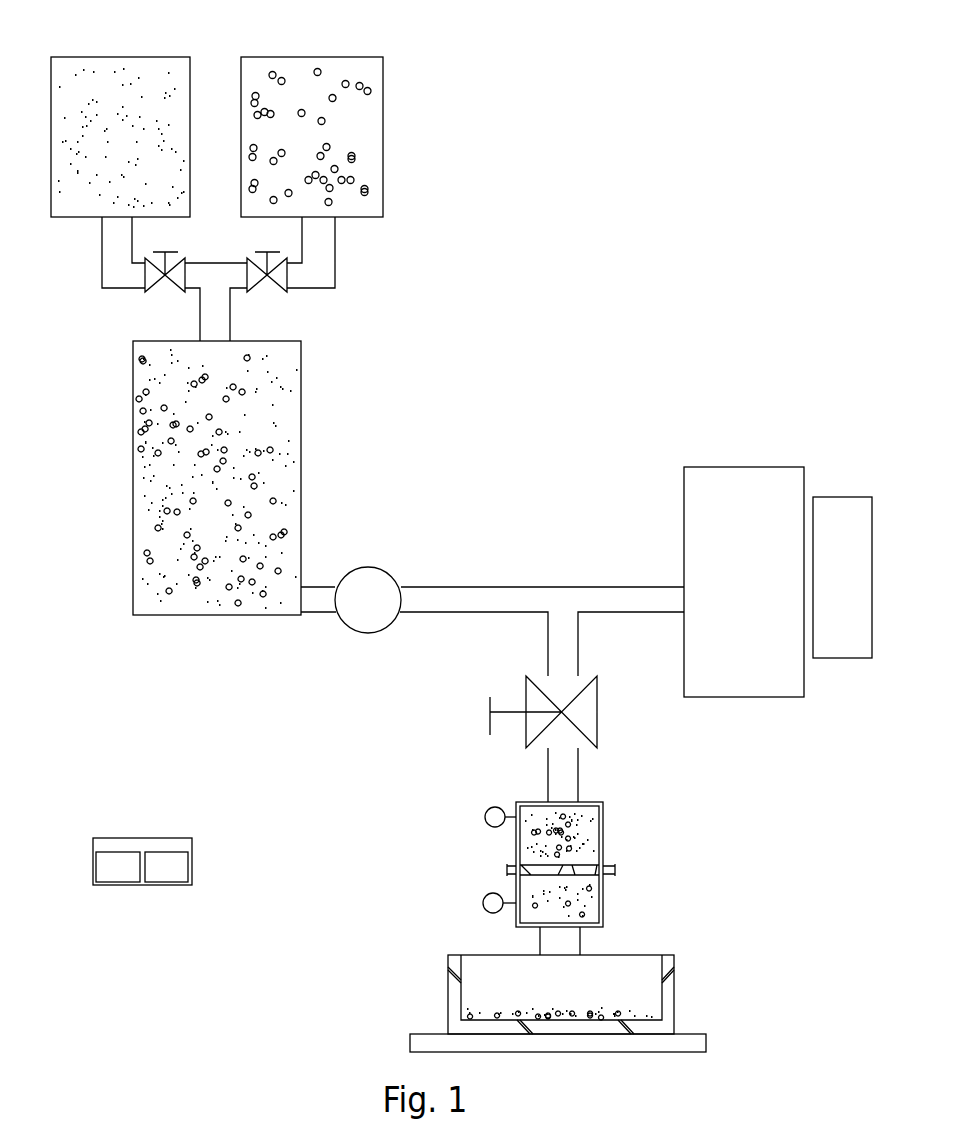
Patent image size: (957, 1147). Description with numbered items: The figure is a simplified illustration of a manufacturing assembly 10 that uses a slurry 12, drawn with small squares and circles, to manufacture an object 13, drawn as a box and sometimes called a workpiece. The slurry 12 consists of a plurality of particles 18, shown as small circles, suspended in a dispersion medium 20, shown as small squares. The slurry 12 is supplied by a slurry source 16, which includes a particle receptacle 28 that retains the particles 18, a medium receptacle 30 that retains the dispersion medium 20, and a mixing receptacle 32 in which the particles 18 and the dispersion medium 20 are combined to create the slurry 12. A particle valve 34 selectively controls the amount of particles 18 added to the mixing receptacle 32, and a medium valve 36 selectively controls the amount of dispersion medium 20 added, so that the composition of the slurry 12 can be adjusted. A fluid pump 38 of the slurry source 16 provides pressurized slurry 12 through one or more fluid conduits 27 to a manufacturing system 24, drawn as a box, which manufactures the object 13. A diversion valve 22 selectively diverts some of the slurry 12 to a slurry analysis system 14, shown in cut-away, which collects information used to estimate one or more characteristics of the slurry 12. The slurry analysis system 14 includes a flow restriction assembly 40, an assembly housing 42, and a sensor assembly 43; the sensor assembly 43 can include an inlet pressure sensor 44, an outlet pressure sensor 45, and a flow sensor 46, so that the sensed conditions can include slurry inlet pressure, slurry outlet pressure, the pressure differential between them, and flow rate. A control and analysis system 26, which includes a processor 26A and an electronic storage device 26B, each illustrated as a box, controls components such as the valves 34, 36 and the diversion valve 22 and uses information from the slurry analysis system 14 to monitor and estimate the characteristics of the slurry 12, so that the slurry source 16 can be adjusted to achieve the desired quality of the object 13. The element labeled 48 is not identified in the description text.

The manufacturing assembly 10 is at (588, 84).
The slurry 12 is at (216, 461).
The object 13 is at (828, 579).
The slurry analysis system 14 is at (505, 832).
The slurry source 16 is at (313, 422).
The particles 18 is at (312, 111).
The dispersion medium 20 is at (120, 111).
The diversion valve 22 is at (581, 703).
The manufacturing system 24 is at (730, 579).
The control and analysis system 26 is at (173, 861).
The processor 26A is at (99, 878).
The electronic storage device 26B is at (147, 878).
The fluid conduit 27 is at (478, 586).
The particle receptacle 28 is at (338, 57).
The medium receptacle 30 is at (148, 56).
The mixing receptacle 32 is at (133, 410).
The particle valve 34 is at (282, 289).
The medium valve 36 is at (148, 288).
The fluid pump 38 is at (355, 612).
The flow restriction assembly 40 is at (517, 863).
The assembly housing 42 is at (517, 887).
The sensor assembly 43 is at (489, 791).
The inlet pressure sensor 44 is at (485, 817).
The outlet pressure sensor 45 is at (465, 903).
The flow sensor 46 is at (465, 948).
The hopper vessel 48 is at (615, 847).